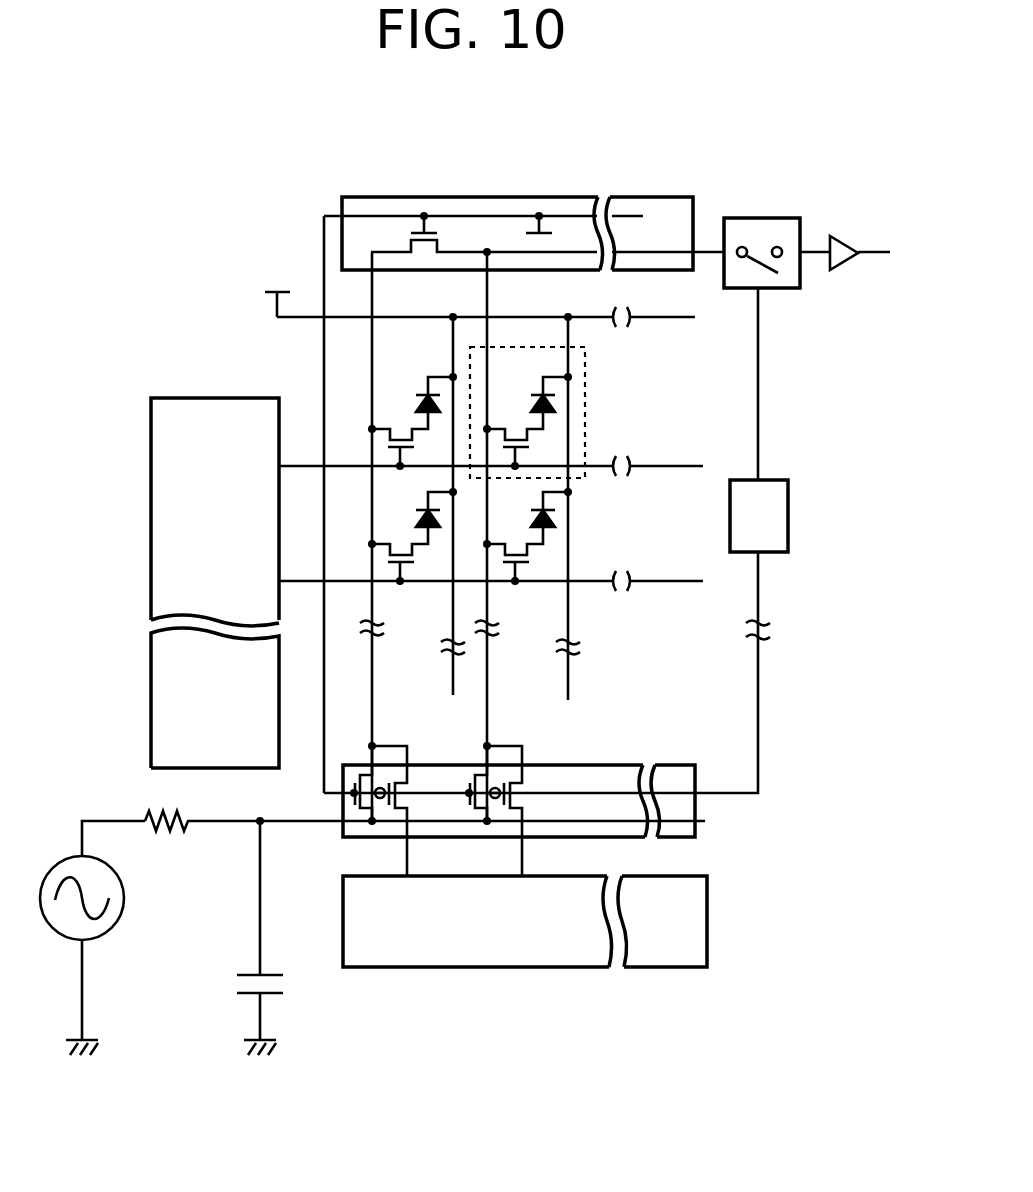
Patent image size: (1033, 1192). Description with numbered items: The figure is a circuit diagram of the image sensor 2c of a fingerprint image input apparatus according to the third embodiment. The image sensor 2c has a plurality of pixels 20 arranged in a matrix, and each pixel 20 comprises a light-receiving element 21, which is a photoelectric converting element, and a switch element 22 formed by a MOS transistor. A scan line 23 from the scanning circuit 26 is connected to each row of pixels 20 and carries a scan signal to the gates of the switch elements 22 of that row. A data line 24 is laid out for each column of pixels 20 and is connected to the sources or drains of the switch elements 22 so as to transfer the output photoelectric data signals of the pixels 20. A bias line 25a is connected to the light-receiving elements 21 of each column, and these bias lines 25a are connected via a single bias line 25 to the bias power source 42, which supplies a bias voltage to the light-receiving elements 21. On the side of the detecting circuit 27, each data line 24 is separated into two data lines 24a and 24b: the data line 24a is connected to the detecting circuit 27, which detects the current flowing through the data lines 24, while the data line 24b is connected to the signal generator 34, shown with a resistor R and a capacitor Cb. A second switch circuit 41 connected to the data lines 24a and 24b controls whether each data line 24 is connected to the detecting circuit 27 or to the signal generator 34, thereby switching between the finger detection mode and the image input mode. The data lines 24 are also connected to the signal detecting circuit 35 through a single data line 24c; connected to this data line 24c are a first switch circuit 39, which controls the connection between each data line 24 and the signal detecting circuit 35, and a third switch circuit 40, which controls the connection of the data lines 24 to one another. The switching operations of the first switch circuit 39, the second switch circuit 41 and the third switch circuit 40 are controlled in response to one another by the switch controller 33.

The image sensor 2c is at (530, 159).
The third switch circuit 40 is at (386, 197).
The data line 24c is at (467, 250).
The first switch circuit 39 is at (730, 218).
The signal detecting circuit 35 is at (836, 268).
The bias power source 42 is at (271, 291).
The bias line 25 is at (300, 318).
The scanning circuit 26 is at (210, 398).
The scan line 23 is at (350, 462).
The pixel 20 is at (585, 356).
The switch element 22 is at (517, 428).
The light-receiving element 21 is at (548, 405).
The bias line 25a is at (372, 597).
The data line 24 is at (372, 688).
The data line 24a is at (410, 749).
The data line 24b is at (372, 766).
The second switch circuit 41 is at (705, 826).
The detecting circuit 27 is at (707, 905).
The switch controller 33 is at (790, 503).
The signal generator 34 is at (124, 900).
The resistor R is at (202, 804).
The capacitor Cb is at (282, 936).